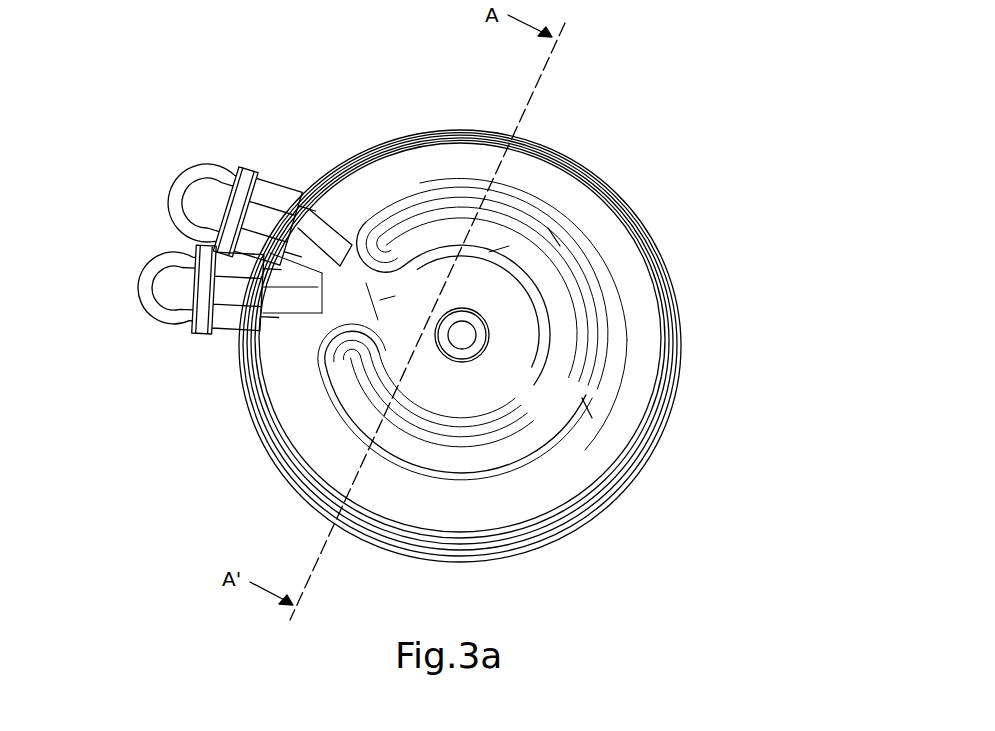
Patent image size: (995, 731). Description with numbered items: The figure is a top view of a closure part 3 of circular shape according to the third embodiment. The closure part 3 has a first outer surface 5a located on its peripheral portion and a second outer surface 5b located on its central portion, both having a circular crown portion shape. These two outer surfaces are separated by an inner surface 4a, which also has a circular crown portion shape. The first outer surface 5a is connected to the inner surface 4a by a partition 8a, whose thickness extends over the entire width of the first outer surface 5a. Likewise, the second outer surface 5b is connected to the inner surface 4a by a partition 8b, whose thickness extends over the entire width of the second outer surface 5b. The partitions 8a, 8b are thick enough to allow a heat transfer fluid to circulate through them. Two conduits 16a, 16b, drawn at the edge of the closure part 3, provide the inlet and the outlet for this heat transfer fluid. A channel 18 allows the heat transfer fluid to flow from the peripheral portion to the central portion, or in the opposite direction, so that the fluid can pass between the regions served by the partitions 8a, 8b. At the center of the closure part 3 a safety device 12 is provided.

The closure part 3 is at (651, 128).
The inner surface 4a is at (545, 421).
The first outer surface 5a is at (623, 282).
The second outer surface 5b is at (507, 357).
The partition 8a is at (545, 240).
The partition 8b is at (372, 362).
The safety device 12 is at (462, 338).
The conduit 16a is at (190, 167).
The conduit 16b is at (153, 273).
The channel 18 is at (372, 290).